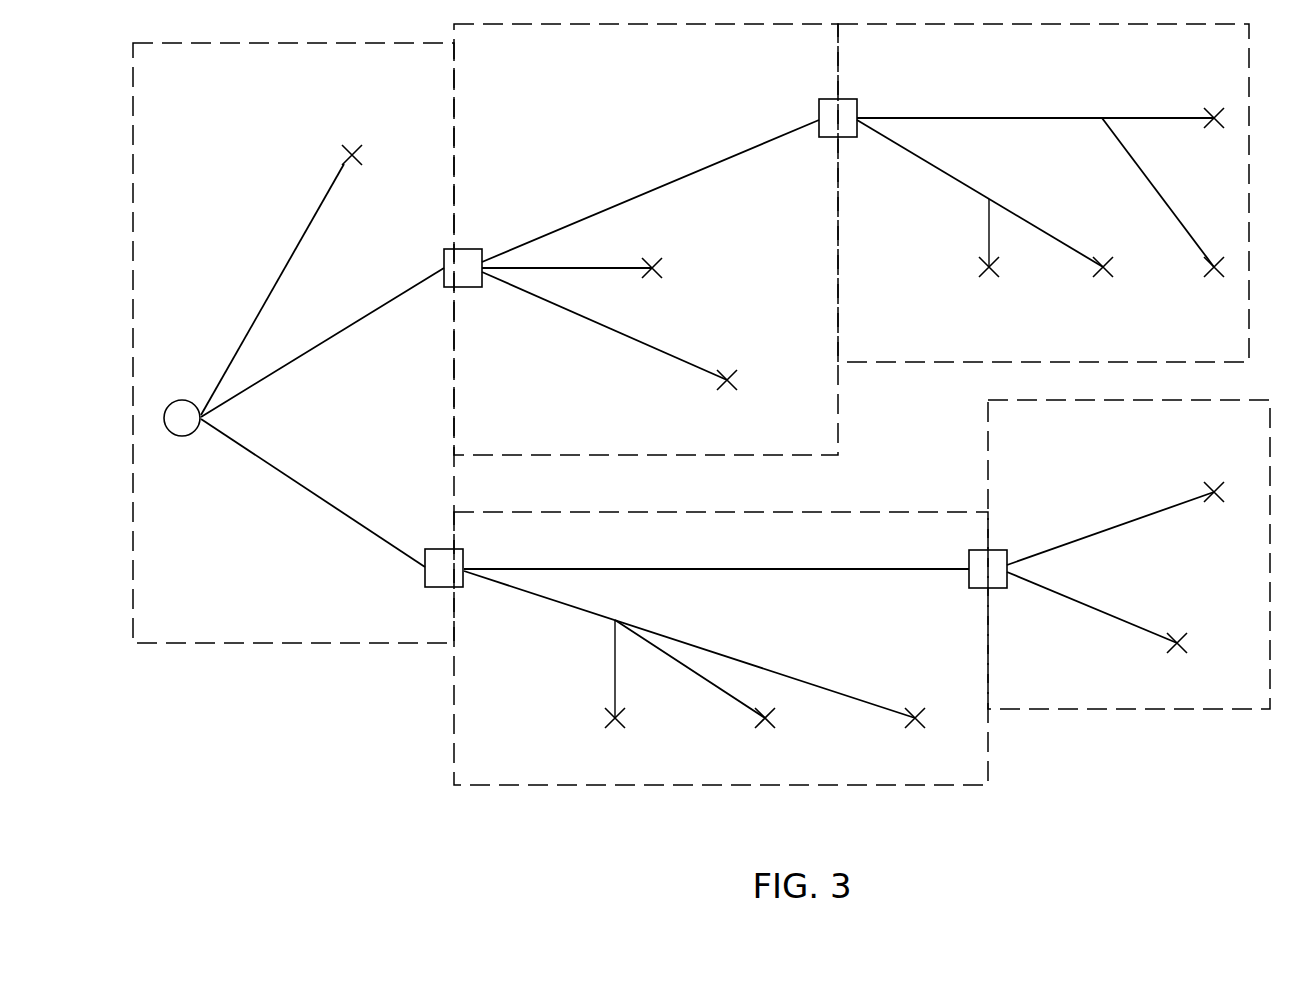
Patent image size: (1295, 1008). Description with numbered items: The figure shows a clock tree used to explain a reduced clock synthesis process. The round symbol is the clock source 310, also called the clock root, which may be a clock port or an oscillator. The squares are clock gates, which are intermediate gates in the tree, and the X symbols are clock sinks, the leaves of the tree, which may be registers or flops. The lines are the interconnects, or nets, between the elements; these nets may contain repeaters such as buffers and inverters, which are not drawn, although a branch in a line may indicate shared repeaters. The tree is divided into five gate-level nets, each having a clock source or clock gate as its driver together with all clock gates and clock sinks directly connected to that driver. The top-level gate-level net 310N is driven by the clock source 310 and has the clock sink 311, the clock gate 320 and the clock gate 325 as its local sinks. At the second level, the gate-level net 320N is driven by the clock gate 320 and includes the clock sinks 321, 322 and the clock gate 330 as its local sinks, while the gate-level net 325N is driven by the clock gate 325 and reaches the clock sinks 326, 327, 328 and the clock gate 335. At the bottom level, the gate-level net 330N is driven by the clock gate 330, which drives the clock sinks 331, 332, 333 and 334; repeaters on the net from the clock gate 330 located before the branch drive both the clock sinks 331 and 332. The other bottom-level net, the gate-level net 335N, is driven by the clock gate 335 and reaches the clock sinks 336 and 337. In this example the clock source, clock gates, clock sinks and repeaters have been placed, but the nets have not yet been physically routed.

The clock source 310 is at (181, 380).
The gate-level net 310N is at (293, 343).
The clock sink 311 is at (285, 261).
The clock gate 320 is at (343, 317).
The gate-level net 320N is at (646, 239).
The clock sink 321 is at (576, 287).
The clock sink 322 is at (613, 350).
The clock gate 325 is at (332, 503).
The gate-level net 325N is at (721, 648).
The clock sink 326 is at (615, 693).
The clock sink 327 is at (699, 693).
The clock sink 328 is at (698, 668).
The clock gate 330 is at (672, 165).
The gate-level net 330N is at (1043, 193).
The clock sink 331 is at (989, 257).
The clock sink 332 is at (989, 218).
The clock sink 333 is at (1167, 217).
The clock sink 334 is at (1044, 137).
The clock gate 335 is at (739, 553).
The gate-level net 335N is at (1129, 554).
The clock sink 336 is at (1101, 631).
The clock sink 337 is at (1118, 504).